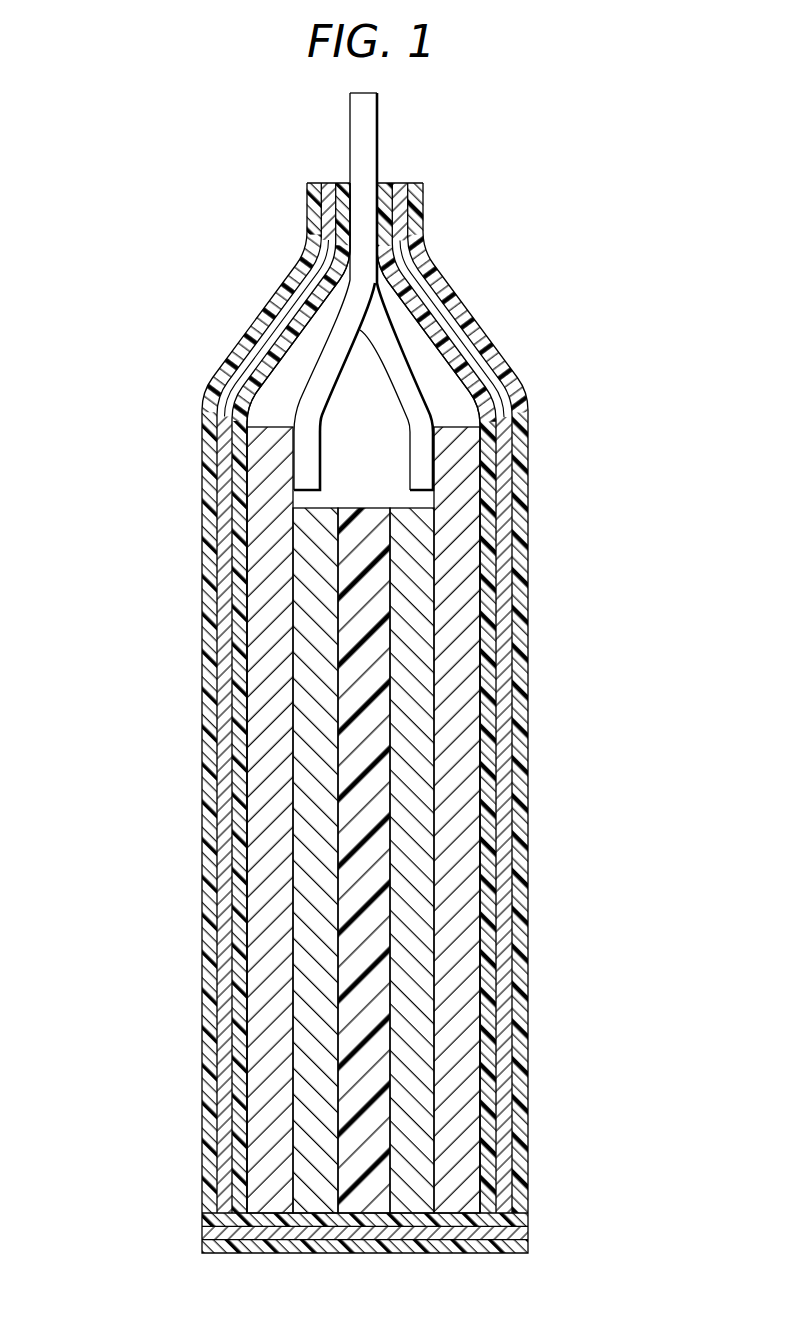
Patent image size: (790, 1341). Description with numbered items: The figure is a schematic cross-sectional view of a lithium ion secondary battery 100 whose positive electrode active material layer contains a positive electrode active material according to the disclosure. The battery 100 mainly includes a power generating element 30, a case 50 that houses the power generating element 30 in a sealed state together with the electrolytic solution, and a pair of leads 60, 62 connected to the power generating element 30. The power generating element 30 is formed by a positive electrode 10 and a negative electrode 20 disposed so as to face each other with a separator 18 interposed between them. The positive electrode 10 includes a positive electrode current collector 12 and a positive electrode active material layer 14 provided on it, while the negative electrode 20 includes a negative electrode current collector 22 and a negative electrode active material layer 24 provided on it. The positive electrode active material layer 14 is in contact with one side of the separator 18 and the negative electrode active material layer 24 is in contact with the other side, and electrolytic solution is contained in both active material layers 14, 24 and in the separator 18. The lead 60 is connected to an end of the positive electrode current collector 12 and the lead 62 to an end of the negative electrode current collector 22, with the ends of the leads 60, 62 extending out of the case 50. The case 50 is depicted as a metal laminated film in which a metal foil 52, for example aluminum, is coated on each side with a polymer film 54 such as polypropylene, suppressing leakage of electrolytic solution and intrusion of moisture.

The lithium ion secondary battery 100 is at (605, 127).
The case 50 is at (428, 718).
The metal foil 52 is at (503, 622).
The polymer film 54 is at (490, 600).
The power generating element 30 is at (262, 820).
The positive electrode 10 is at (285, 820).
The positive electrode current collector 12 is at (460, 620).
The positive electrode active material layer 14 is at (410, 666).
The separator 18 is at (370, 706).
The negative electrode 20 is at (211, 820).
The negative electrode current collector 22 is at (270, 793).
The negative electrode active material layer 24 is at (318, 752).
The lead 60 is at (395, 355).
The lead 62 is at (330, 358).